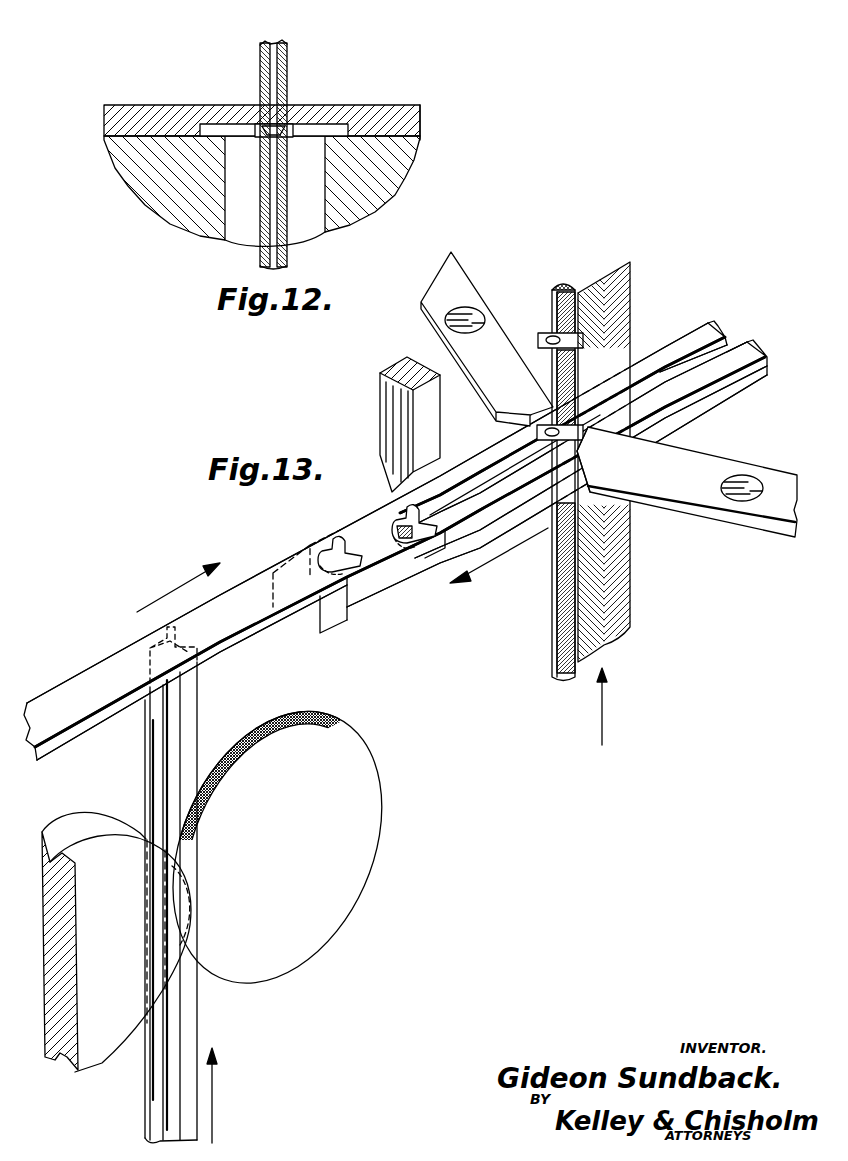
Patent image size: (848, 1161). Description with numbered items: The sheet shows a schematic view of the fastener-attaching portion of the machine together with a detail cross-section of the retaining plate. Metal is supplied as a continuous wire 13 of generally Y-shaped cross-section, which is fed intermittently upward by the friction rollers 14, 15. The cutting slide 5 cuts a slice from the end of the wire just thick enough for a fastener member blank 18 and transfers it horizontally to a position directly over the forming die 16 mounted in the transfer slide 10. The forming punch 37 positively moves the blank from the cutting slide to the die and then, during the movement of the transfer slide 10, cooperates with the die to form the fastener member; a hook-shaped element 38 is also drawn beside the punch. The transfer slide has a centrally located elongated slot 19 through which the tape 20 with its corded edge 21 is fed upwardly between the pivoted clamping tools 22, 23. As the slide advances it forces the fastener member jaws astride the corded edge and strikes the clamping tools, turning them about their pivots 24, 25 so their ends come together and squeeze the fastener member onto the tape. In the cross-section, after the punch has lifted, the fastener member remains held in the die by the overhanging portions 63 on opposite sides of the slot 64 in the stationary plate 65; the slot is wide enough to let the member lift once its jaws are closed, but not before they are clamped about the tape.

In FIG. 13, the cutting slide 5 is at (105, 668).
In FIG. 12, the transfer slide 10 is at (162, 205).
In FIG. 13, the transfer slide 10 is at (325, 615).
In FIG. 13, the continuous wire 13 is at (152, 738).
In FIG. 13, the friction roller 14 is at (95, 1062).
In FIG. 13, the friction roller 15 is at (278, 958).
In FIG. 13, the forming die 16 is at (403, 565).
In FIG. 12, the fastener member blank 18 is at (262, 138).
In FIG. 13, the fastener member blank 18 is at (318, 540).
In FIG. 12, the elongated slot 19 is at (237, 228).
In FIG. 13, the elongated slot 19 is at (473, 497).
In FIG. 13, the tape 20 is at (630, 598).
In FIG. 12, the corded edge 21 is at (263, 46).
In FIG. 13, the corded edge 21 is at (553, 582).
In FIG. 13, the clamping tool 22 is at (499, 355).
In FIG. 13, the clamping tool 23 is at (664, 492).
In FIG. 13, the pivot 24 is at (469, 315).
In FIG. 13, the pivot 25 is at (745, 488).
In FIG. 13, the forming punch 37 is at (388, 462).
In FIG. 13, the hook element 38 is at (394, 497).
In FIG. 12, the overhanging portion 63 is at (240, 103).
In FIG. 12, the slot 64 is at (278, 122).
In FIG. 12, the stationary plate 65 is at (420, 106).